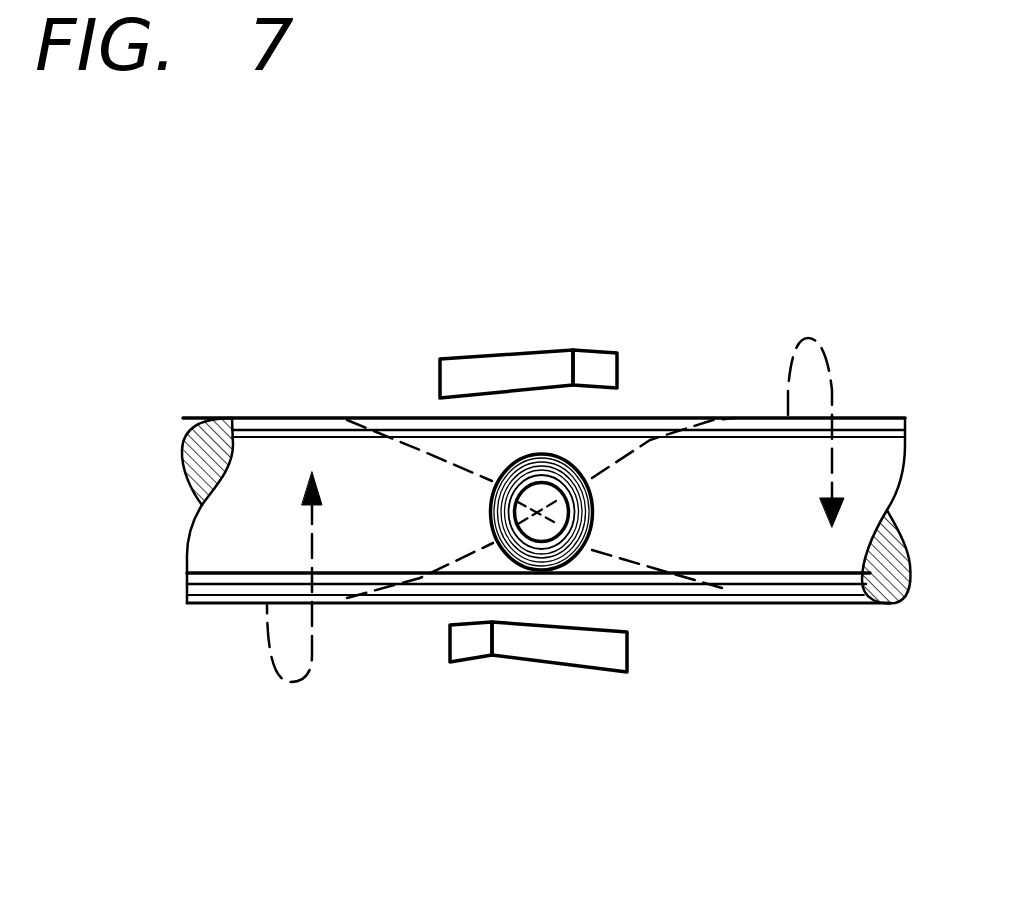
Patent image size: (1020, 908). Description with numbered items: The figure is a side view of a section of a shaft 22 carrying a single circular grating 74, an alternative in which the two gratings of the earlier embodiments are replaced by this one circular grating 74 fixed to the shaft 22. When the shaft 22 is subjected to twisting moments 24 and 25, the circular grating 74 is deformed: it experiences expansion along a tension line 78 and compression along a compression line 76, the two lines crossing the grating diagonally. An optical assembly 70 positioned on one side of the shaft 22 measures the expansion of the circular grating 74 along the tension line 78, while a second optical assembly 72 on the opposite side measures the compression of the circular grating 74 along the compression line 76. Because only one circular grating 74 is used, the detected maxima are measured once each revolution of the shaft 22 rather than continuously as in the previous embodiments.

The shaft 22 is at (264, 546).
The twisting moment 24 is at (265, 579).
The twisting moment 25 is at (831, 420).
The optical assembly 70 is at (508, 352).
The optical assembly 72 is at (560, 675).
The circular grating 74 is at (572, 468).
The compression line 76 is at (605, 560).
The tension line 78 is at (447, 455).